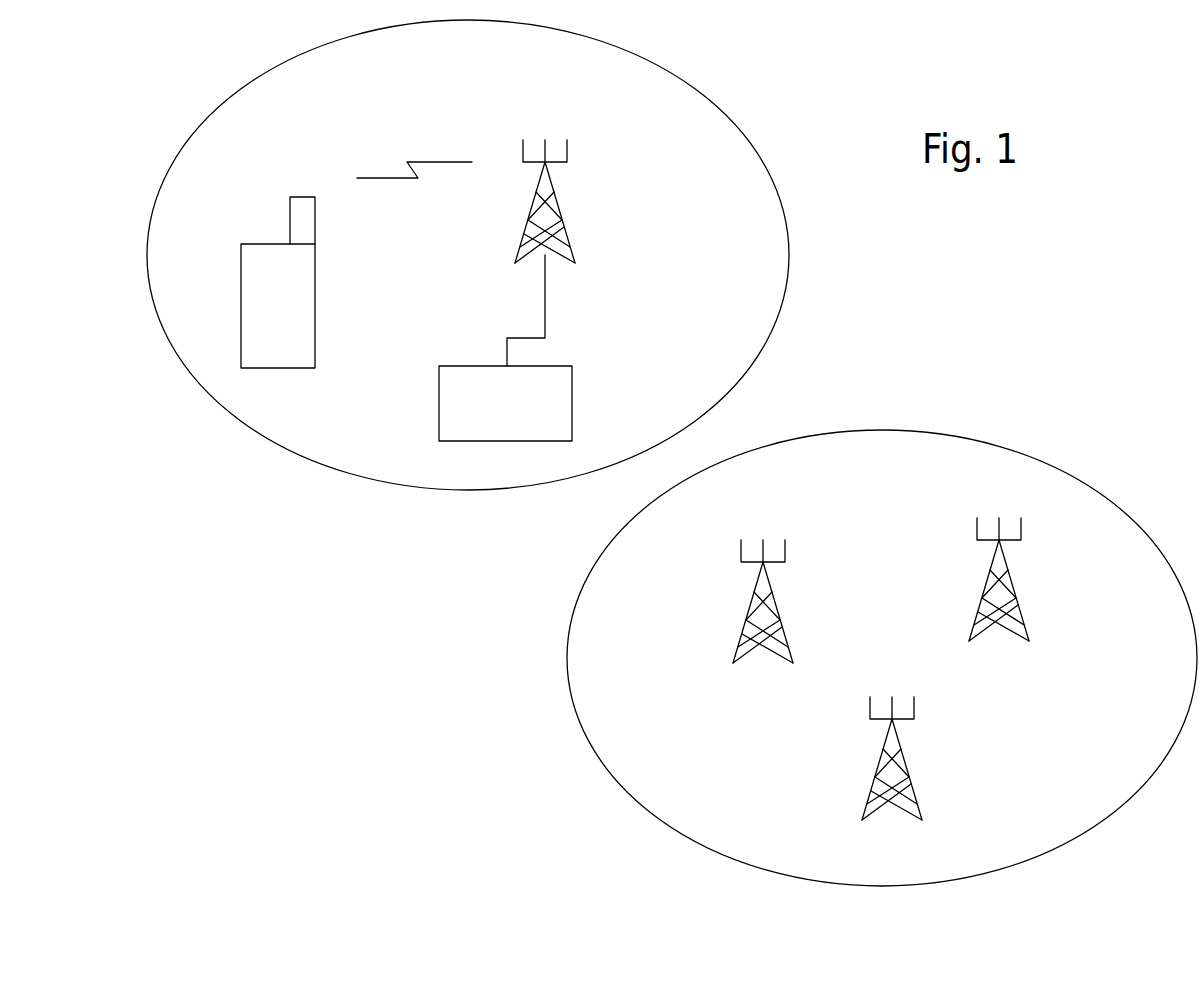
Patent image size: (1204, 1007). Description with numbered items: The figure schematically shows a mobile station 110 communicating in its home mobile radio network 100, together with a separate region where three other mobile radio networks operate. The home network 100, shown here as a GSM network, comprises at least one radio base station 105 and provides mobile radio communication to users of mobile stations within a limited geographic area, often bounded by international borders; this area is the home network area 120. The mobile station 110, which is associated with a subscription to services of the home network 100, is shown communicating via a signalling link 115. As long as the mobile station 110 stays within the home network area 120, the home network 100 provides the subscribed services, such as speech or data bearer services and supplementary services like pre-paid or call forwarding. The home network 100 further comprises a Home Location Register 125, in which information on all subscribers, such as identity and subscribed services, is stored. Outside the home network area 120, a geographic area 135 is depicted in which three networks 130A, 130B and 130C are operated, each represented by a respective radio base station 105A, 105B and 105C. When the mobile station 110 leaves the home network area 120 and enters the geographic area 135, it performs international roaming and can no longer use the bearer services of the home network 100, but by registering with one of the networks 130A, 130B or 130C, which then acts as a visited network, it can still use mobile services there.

The mobile radio network 100 is at (478, 255).
The radio base station 105 is at (563, 227).
The radio base station 105A is at (786, 640).
The radio base station 105B is at (916, 797).
The radio base station 105C is at (1022, 618).
The mobile station 110 is at (315, 310).
The signalling link 115 is at (397, 176).
The home network area 120 is at (743, 130).
The Home Location Register 125 is at (572, 420).
The network 130A is at (799, 601).
The network 130B is at (927, 758).
The network 130C is at (1034, 579).
The geographic area 135 is at (940, 432).